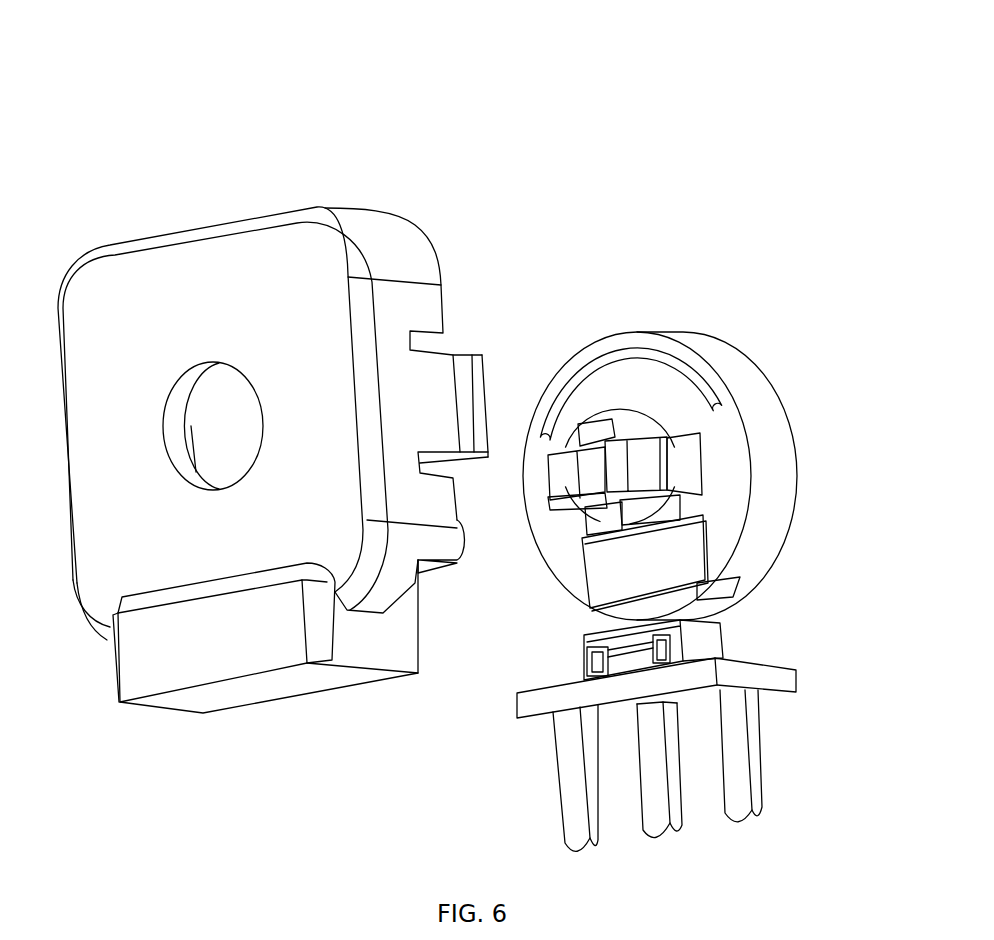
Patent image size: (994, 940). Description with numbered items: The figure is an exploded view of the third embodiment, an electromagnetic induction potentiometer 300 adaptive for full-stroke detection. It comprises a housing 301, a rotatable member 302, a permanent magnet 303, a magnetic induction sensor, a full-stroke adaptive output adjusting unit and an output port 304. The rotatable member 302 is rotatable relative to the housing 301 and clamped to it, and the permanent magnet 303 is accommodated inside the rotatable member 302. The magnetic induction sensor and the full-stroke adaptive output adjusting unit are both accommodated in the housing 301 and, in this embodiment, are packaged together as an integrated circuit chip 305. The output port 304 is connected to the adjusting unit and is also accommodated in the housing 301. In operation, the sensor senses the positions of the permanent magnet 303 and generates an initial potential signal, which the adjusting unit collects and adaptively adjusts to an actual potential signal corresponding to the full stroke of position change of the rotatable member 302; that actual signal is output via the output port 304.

The electromagnetic induction potentiometer 300 is at (537, 110).
The housing 301 is at (410, 263).
The rotatable member 302 is at (763, 410).
The permanent magnet 303 is at (677, 563).
The output port 304 is at (572, 800).
The integrated circuit chip 305 is at (708, 643).